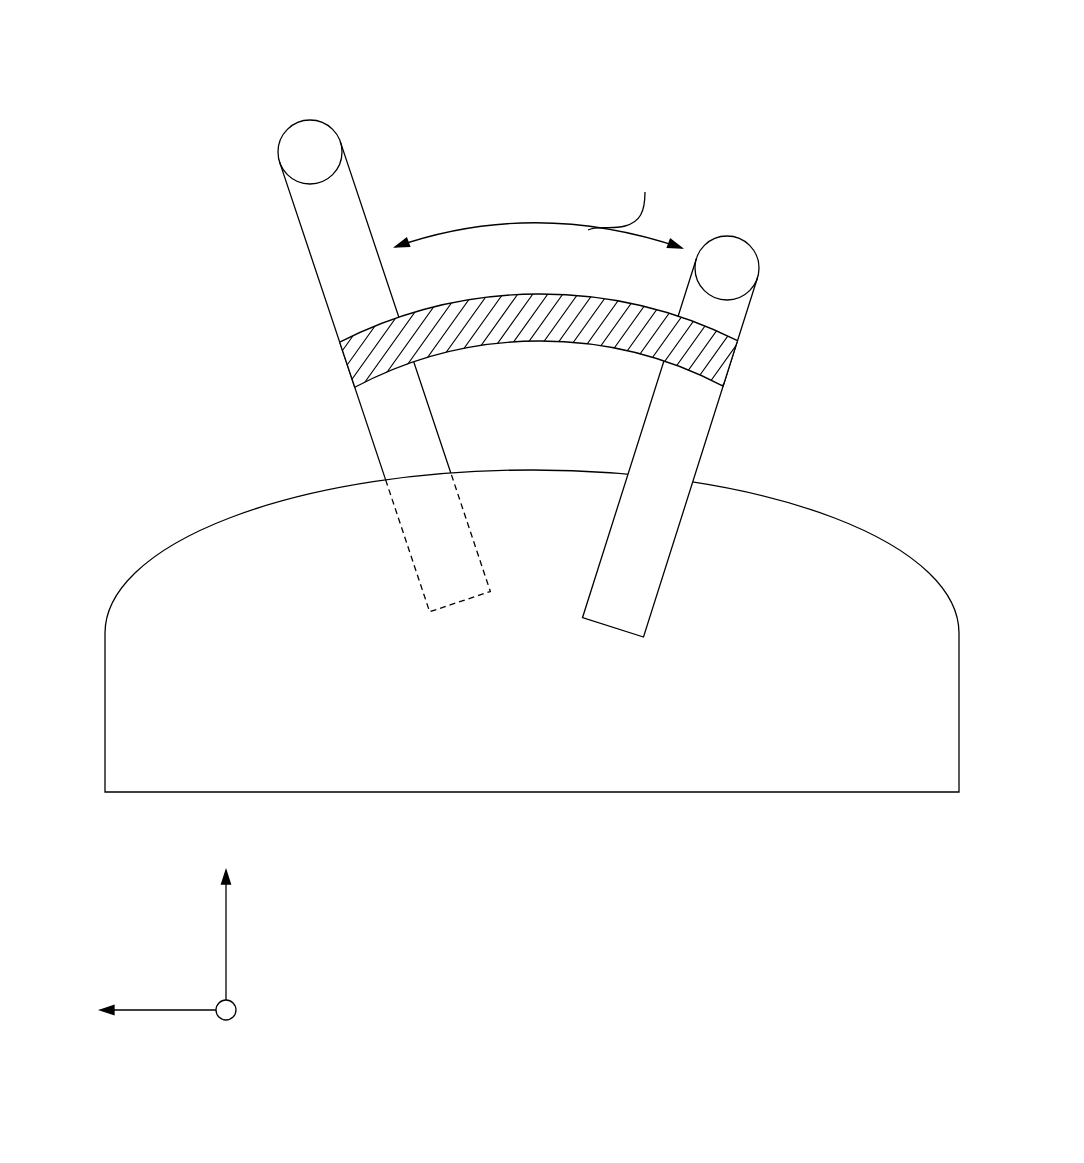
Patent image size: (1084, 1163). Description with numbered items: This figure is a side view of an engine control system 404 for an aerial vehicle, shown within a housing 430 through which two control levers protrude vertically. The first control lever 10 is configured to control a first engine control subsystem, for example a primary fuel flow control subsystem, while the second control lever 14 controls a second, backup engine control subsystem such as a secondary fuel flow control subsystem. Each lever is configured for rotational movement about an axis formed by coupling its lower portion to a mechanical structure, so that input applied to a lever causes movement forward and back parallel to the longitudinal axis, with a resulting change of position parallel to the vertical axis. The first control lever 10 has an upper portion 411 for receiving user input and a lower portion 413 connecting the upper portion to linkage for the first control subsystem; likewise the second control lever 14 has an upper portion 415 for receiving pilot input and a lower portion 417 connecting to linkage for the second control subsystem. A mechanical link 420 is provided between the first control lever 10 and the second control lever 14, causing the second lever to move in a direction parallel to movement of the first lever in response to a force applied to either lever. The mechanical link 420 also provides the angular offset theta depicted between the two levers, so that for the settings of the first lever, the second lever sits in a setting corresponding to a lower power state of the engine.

The engine control system 404 is at (588, 104).
The first control lever 10 is at (245, 219).
The second control lever 14 is at (770, 346).
The upper portion 411 is at (283, 132).
The lower portion 413 is at (308, 247).
The upper portion 415 is at (753, 248).
The lower portion 417 is at (713, 430).
The mechanical link 420 is at (525, 338).
The housing 430 is at (104, 729).